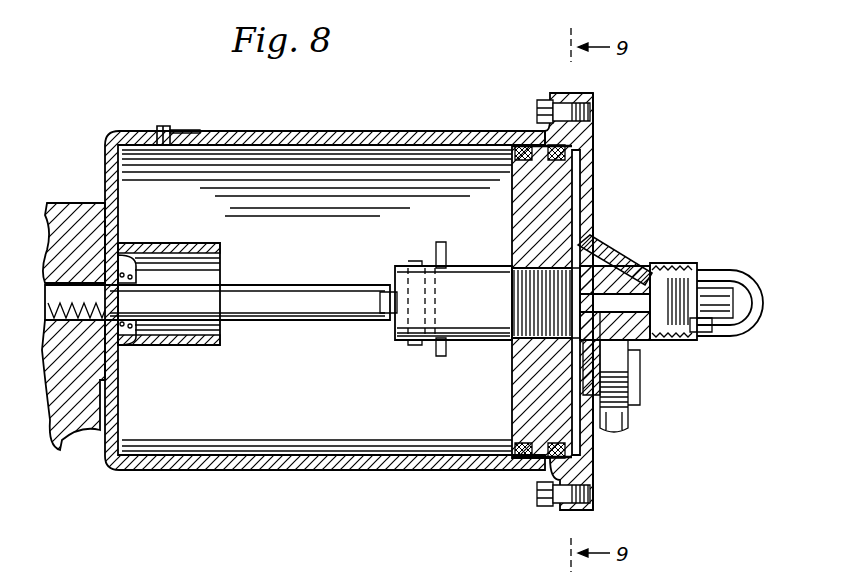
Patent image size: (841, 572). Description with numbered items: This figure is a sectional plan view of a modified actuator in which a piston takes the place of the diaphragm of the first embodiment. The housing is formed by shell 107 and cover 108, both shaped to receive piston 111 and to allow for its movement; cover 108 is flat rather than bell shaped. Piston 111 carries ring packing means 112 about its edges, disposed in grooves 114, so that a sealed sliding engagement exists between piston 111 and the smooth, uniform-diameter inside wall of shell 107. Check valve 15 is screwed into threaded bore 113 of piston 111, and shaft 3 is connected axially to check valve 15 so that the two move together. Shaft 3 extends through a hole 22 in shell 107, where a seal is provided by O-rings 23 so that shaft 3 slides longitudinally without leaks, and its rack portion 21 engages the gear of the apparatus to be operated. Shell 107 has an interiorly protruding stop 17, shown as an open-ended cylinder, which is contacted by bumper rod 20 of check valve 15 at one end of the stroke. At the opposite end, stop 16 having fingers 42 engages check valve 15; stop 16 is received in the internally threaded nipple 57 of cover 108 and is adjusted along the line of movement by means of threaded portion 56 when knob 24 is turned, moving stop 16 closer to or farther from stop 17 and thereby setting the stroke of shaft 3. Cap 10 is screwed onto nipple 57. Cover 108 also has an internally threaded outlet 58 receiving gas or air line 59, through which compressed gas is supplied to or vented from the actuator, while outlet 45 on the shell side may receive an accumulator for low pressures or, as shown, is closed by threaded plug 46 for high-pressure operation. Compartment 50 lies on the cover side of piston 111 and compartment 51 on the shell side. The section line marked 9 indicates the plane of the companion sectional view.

The shaft 3 is at (292, 285).
The bolt 9 is at (537, 110).
The cap 10 is at (750, 275).
The check valve 15 is at (400, 266).
The stop 16 is at (640, 268).
The stop 17 is at (165, 356).
The bumper rod 20 is at (437, 355).
The rack portion 21 is at (44, 335).
The hole 22 is at (128, 270).
The O-rings 23 is at (140, 325).
The knob 24 is at (716, 275).
The fingers 42 is at (600, 252).
The outlet 45 is at (182, 131).
The threaded plug 46 is at (157, 127).
The compartment 50 is at (635, 330).
The compartment 51 is at (312, 376).
The threaded portion 56 is at (700, 330).
The threaded nipple 57 is at (672, 265).
The internally threaded outlet 58 is at (630, 385).
The gas or air line 59 is at (630, 420).
The shell 107 is at (340, 135).
The cover 108 is at (597, 147).
The piston 111 is at (580, 180).
The ring packing means 112 is at (522, 448).
The threaded bore 113 is at (530, 268).
The grooves 114 is at (520, 458).